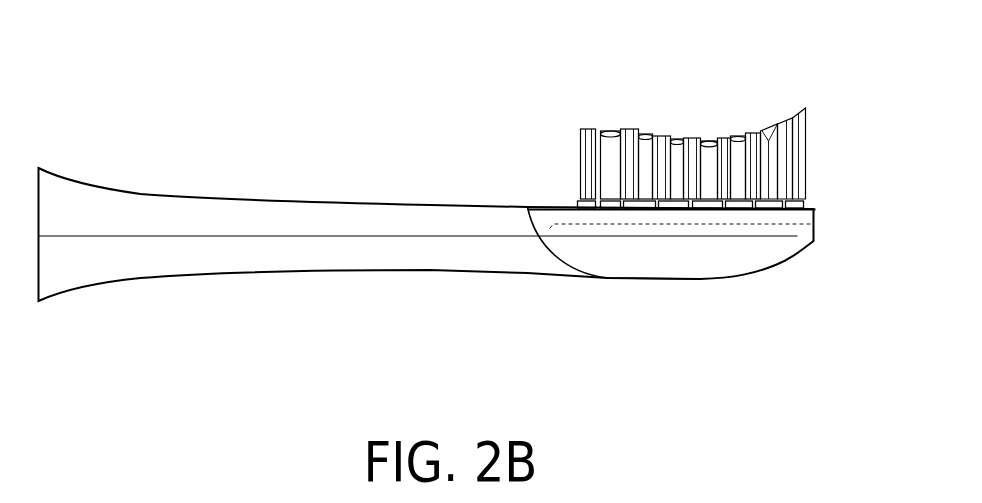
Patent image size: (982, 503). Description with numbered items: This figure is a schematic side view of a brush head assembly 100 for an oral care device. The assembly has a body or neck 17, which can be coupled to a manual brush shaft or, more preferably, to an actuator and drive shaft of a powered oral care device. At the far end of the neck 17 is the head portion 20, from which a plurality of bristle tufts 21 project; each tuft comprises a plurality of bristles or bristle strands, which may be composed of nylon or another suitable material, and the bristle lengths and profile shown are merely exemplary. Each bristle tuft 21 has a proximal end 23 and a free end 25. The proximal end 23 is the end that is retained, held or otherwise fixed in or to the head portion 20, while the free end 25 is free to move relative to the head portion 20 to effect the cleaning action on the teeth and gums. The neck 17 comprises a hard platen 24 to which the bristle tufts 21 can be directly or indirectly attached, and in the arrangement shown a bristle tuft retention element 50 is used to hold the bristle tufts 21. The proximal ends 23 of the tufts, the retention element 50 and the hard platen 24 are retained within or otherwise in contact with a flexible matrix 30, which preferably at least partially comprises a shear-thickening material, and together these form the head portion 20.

The brush head assembly 100 is at (465, 206).
The neck 17 is at (295, 192).
The head portion 20 is at (655, 280).
The bristle tufts 21 is at (692, 152).
The proximal end 23 is at (576, 201).
The hard platen 24 is at (610, 272).
The free end 25 is at (805, 123).
The flexible matrix 30 is at (761, 237).
The bristle tuft retention element 50 is at (806, 201).